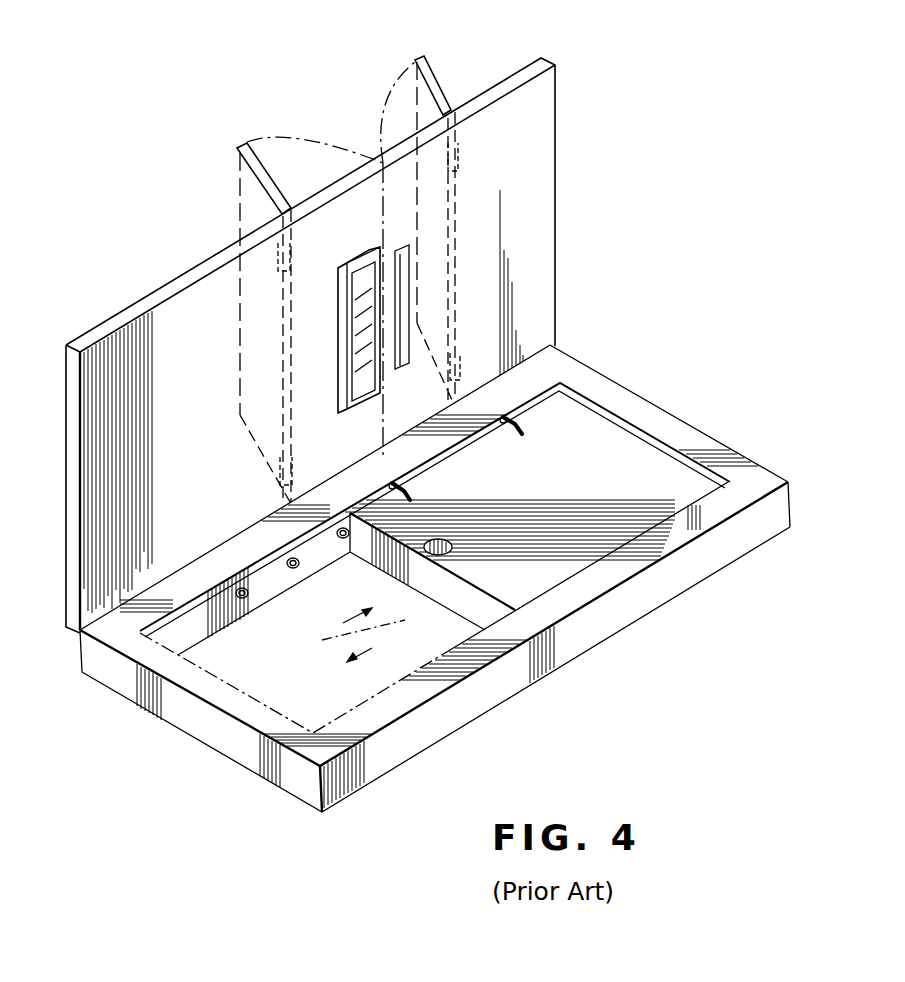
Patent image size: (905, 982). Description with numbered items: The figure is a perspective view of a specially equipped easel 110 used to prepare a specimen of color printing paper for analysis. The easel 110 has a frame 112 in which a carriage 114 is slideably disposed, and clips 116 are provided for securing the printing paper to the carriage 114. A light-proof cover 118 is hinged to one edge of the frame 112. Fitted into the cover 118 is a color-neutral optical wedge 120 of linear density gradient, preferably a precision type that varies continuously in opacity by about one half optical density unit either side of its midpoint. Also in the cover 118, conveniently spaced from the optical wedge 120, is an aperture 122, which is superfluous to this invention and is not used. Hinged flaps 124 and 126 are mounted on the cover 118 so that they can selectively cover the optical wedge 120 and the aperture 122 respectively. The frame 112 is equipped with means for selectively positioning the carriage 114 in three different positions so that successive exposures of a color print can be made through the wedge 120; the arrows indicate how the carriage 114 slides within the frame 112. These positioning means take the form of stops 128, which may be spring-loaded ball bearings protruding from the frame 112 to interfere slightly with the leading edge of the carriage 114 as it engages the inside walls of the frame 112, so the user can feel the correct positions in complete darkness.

The easel 110 is at (689, 694).
The frame 112 is at (668, 422).
The carriage 114 is at (668, 480).
The clips 116 is at (520, 428).
The light-proof cover 118 is at (535, 128).
The color-neutral optical wedge 120 is at (357, 298).
The aperture 122 is at (410, 258).
The hinged flap 124 is at (240, 173).
The hinged flap 126 is at (432, 72).
The stops 128 is at (335, 538).